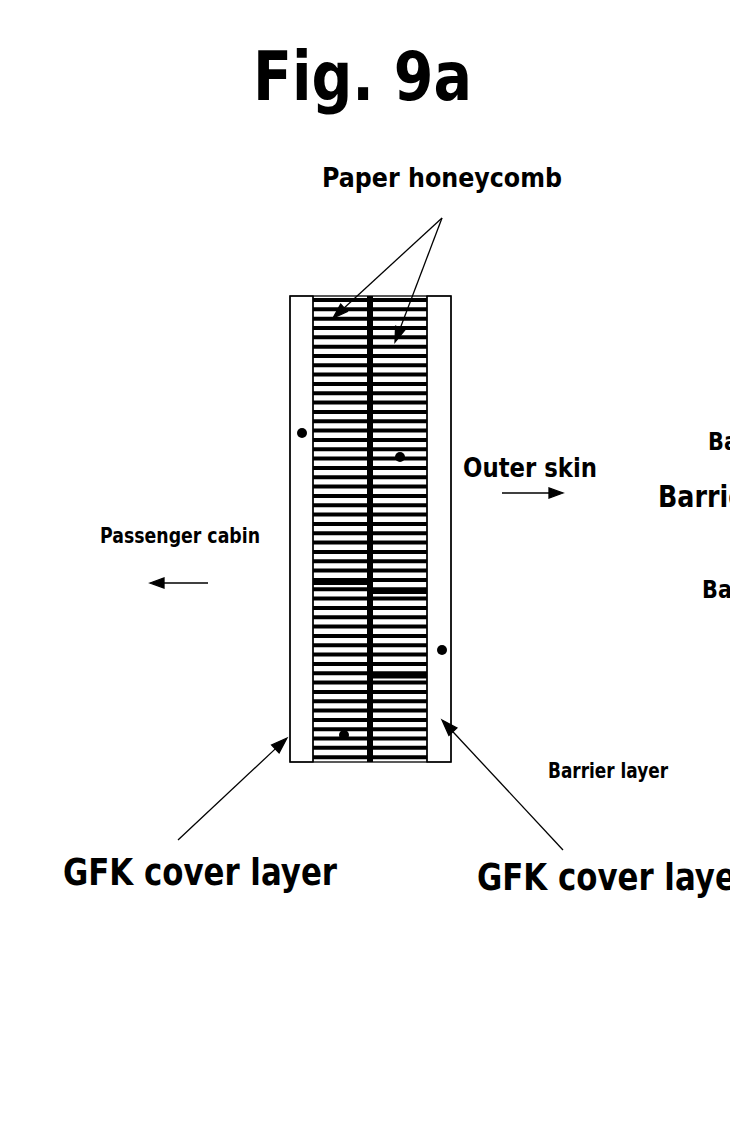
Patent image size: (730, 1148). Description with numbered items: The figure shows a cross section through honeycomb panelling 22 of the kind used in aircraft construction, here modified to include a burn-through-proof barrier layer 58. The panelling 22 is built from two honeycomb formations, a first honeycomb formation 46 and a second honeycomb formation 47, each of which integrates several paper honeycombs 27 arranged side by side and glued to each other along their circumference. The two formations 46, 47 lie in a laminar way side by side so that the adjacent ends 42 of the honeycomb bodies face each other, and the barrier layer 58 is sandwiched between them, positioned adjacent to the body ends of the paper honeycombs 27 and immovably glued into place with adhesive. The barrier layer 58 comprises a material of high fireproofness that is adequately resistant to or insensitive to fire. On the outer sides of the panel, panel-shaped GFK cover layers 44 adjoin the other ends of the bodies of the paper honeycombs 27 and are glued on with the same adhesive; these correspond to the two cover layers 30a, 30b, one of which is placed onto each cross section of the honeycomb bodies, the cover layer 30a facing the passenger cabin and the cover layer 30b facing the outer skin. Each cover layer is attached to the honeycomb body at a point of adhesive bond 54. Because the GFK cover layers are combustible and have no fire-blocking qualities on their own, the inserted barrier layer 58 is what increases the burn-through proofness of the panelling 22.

The honeycomb panel 22 is at (179, 332).
The GFK cover layer 44 is at (470, 368).
The point of adhesive bond 54 is at (297, 402).
The first honeycomb formation 46 is at (324, 284).
The paper honeycomb 27 is at (400, 457).
The second honeycomb formation 47 is at (398, 776).
The cover layer 30a is at (302, 433).
The cover layer 30b is at (442, 650).
The adjacent ends of the honeycomb body 42 is at (331, 587).
The burn-through-proof barrier layer 58 is at (395, 685).